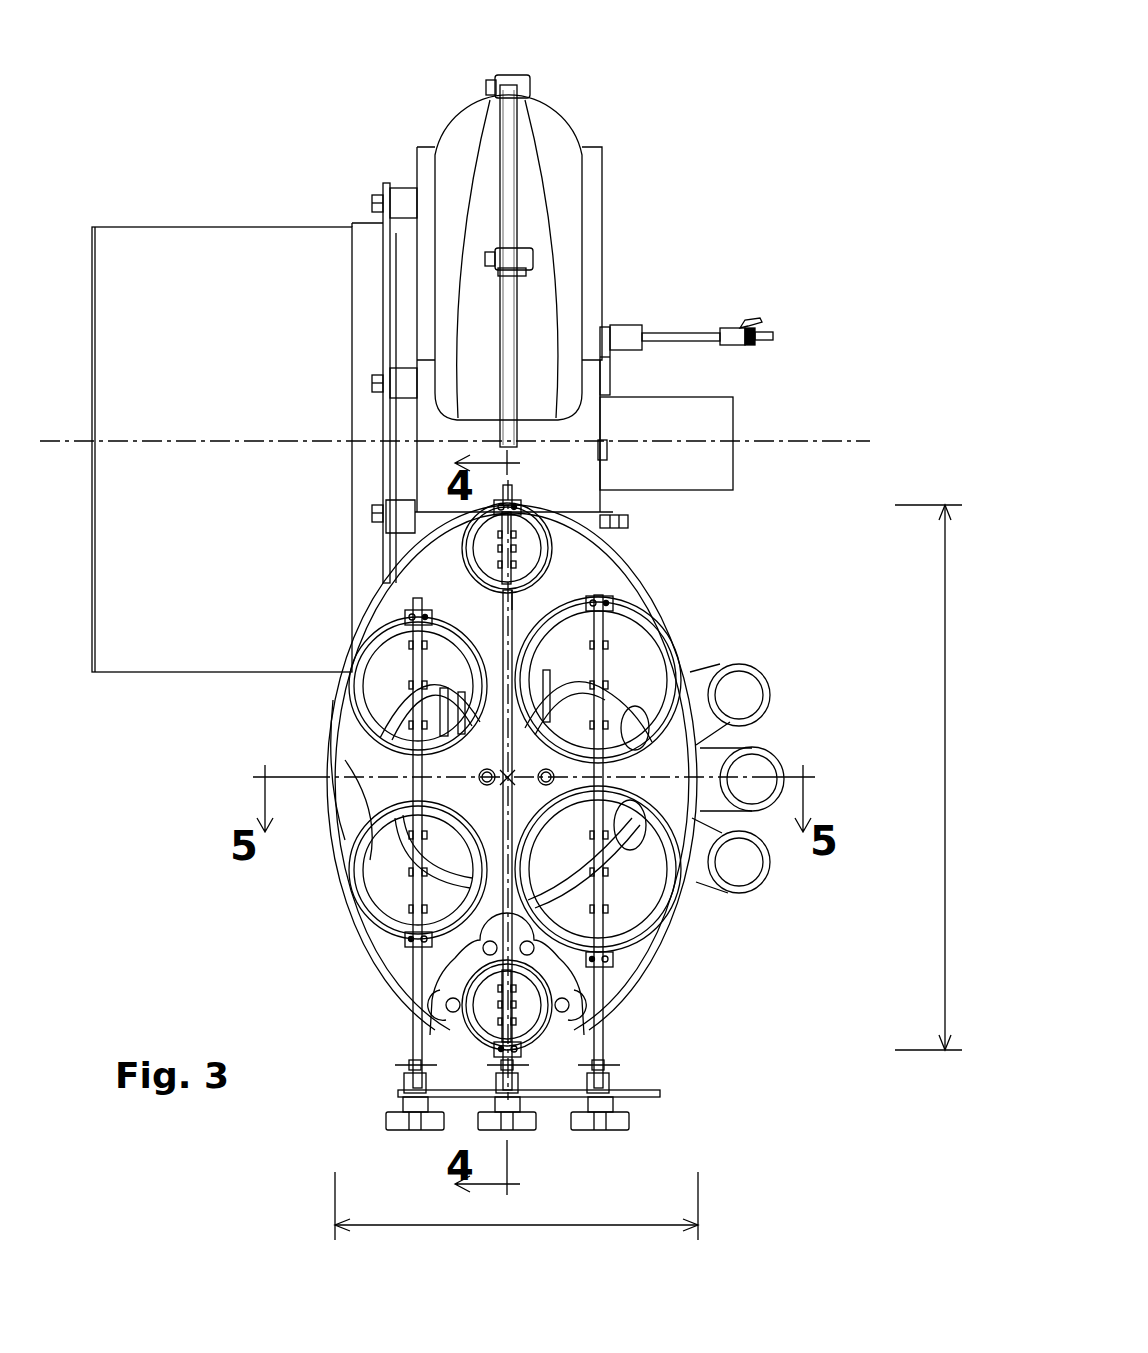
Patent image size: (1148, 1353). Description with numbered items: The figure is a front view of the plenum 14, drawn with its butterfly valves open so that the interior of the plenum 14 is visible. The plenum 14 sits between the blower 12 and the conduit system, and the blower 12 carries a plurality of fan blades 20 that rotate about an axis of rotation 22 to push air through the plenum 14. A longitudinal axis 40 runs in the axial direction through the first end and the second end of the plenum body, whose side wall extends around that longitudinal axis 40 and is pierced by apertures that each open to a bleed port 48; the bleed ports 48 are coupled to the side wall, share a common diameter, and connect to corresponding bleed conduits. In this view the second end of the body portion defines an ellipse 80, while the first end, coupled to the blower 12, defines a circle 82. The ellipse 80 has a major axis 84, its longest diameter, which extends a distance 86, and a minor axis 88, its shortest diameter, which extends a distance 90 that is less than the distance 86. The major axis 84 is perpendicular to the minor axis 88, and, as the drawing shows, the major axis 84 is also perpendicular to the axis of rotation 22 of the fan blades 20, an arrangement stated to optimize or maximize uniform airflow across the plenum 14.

The blower 12 is at (574, 111).
The fan blades 20 is at (545, 303).
The axis of rotation 22 is at (833, 440).
The plenum 14 is at (557, 807).
The longitudinal axis 40 is at (512, 782).
The bleed port 48 is at (770, 862).
The ellipse 80 is at (345, 752).
The circle 82 is at (400, 712).
The major axis 84 is at (520, 610).
The distance 86 is at (945, 648).
The minor axis 88 is at (365, 748).
The distance 90 is at (520, 1225).